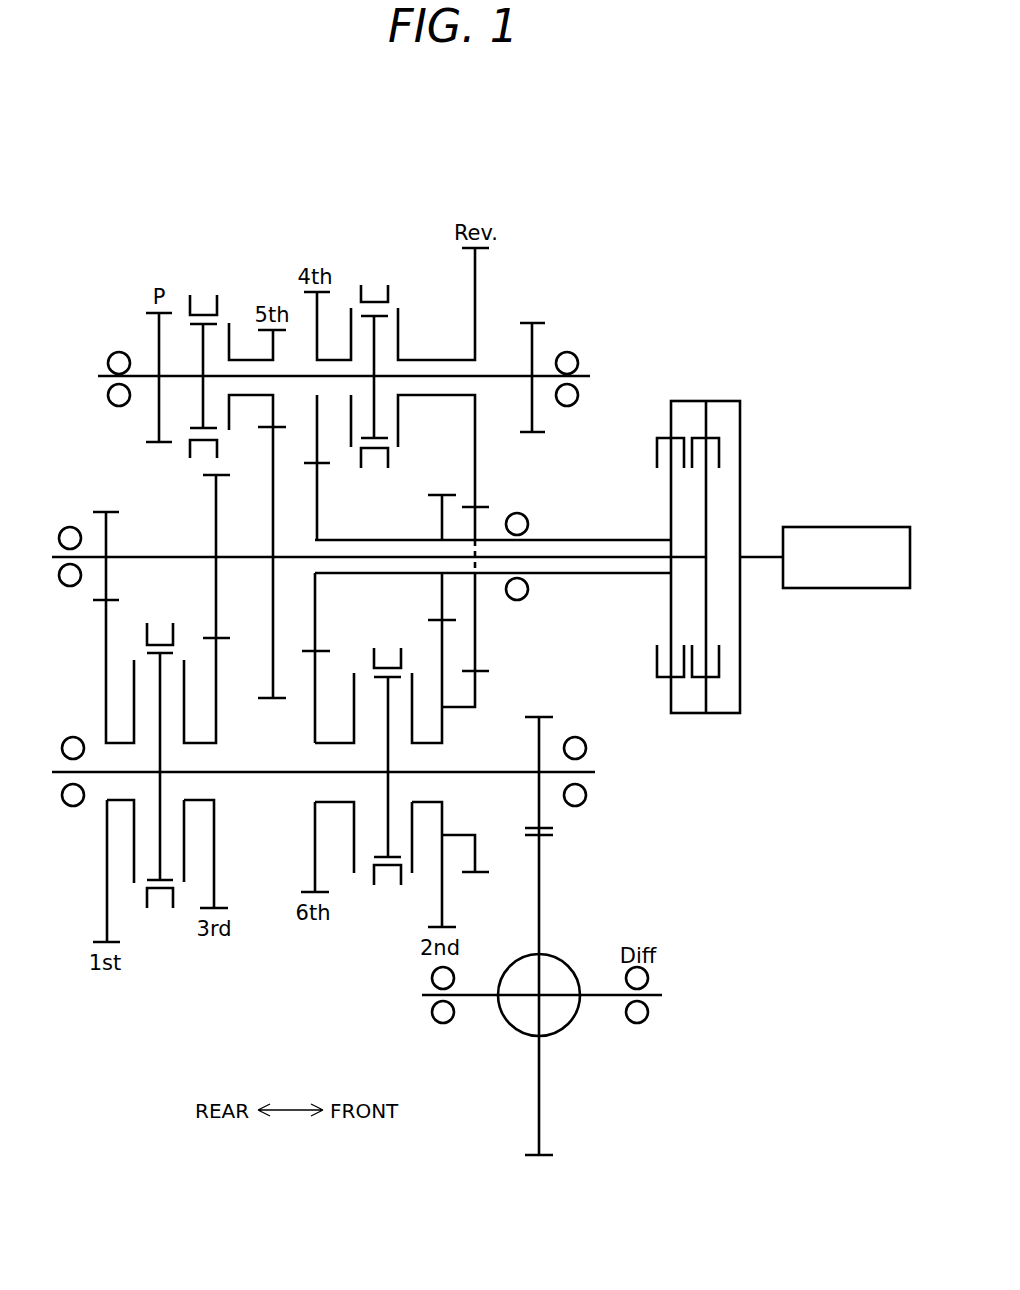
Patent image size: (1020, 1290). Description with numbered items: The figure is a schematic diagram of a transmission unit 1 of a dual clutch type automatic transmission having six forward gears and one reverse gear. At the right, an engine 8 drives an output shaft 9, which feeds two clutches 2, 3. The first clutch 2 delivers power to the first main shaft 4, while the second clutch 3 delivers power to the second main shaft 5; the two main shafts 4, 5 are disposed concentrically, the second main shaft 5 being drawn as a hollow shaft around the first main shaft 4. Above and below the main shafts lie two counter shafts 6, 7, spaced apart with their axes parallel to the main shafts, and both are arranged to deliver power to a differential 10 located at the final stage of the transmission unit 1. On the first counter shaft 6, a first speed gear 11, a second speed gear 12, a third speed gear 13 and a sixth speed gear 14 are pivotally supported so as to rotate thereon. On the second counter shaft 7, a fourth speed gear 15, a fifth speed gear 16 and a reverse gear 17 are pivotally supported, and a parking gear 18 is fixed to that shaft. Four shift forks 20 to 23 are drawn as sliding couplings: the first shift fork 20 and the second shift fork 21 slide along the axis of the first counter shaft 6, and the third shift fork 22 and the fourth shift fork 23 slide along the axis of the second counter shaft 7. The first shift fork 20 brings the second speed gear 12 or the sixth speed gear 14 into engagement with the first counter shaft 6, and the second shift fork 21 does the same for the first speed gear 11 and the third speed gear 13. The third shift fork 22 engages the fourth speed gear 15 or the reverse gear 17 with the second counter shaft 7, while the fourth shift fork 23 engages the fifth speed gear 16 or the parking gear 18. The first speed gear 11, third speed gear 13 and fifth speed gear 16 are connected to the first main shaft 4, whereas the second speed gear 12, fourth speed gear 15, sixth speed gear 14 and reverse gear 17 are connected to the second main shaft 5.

The transmission unit 1 is at (178, 1040).
The first clutch 2 is at (718, 432).
The second clutch 3 is at (664, 438).
The first main shaft 4 is at (163, 554).
The second main shaft 5 is at (368, 538).
The first counter shaft 6 is at (247, 770).
The second counter shaft 7 is at (497, 372).
The engine 8 is at (887, 527).
The output shaft 9 is at (759, 553).
The differential 10 is at (560, 958).
The first speed gear 11 is at (106, 862).
The second speed gear 12 is at (443, 888).
The third speed gear 13 is at (216, 862).
The sixth speed gear 14 is at (314, 818).
The fourth speed gear 15 is at (316, 325).
The fifth speed gear 16 is at (268, 347).
The reverse gear 17 is at (475, 295).
The parking gear 18 is at (159, 335).
The first shift fork 20 is at (385, 888).
The second shift fork 21 is at (157, 910).
The third shift fork 22 is at (376, 285).
The fourth shift fork 23 is at (206, 295).